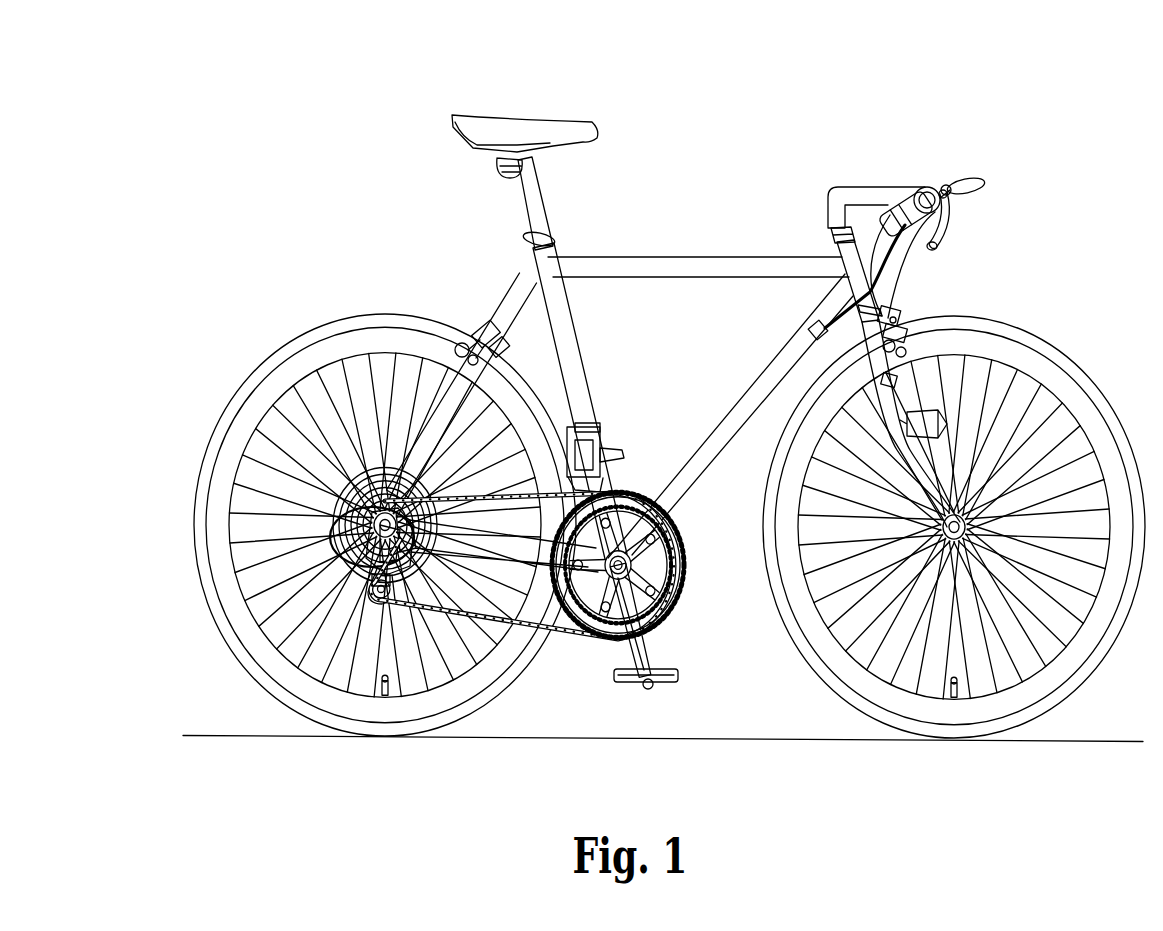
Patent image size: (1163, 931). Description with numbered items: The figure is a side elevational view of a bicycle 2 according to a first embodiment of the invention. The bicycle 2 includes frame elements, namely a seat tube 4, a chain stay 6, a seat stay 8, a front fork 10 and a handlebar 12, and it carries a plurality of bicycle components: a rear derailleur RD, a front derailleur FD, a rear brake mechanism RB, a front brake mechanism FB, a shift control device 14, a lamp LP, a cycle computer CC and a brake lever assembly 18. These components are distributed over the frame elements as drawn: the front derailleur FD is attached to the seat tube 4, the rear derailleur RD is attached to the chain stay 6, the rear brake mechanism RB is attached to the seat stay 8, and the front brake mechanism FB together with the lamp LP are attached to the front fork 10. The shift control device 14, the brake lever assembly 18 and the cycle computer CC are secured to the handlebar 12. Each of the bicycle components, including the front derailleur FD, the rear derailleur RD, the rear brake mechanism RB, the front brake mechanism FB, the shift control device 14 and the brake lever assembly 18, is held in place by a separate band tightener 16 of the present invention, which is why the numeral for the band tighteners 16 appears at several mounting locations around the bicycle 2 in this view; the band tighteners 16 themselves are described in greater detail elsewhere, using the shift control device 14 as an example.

The bicycle 2 is at (737, 60).
The seat tube 4 is at (575, 386).
The chain stay 6 is at (460, 538).
The seat stay 8 is at (524, 300).
The front fork 10 is at (866, 346).
The handlebar 12 is at (886, 193).
The shift control device 14 is at (953, 207).
The band tightener 16 is at (943, 193).
The brake lever assembly 18 is at (935, 247).
The cycle computer CC is at (975, 182).
The lamp LP is at (937, 433).
The front brake mechanism FB is at (898, 333).
The rear brake mechanism RB is at (490, 330).
The front derailleur FD is at (593, 428).
The rear derailleur RD is at (367, 578).